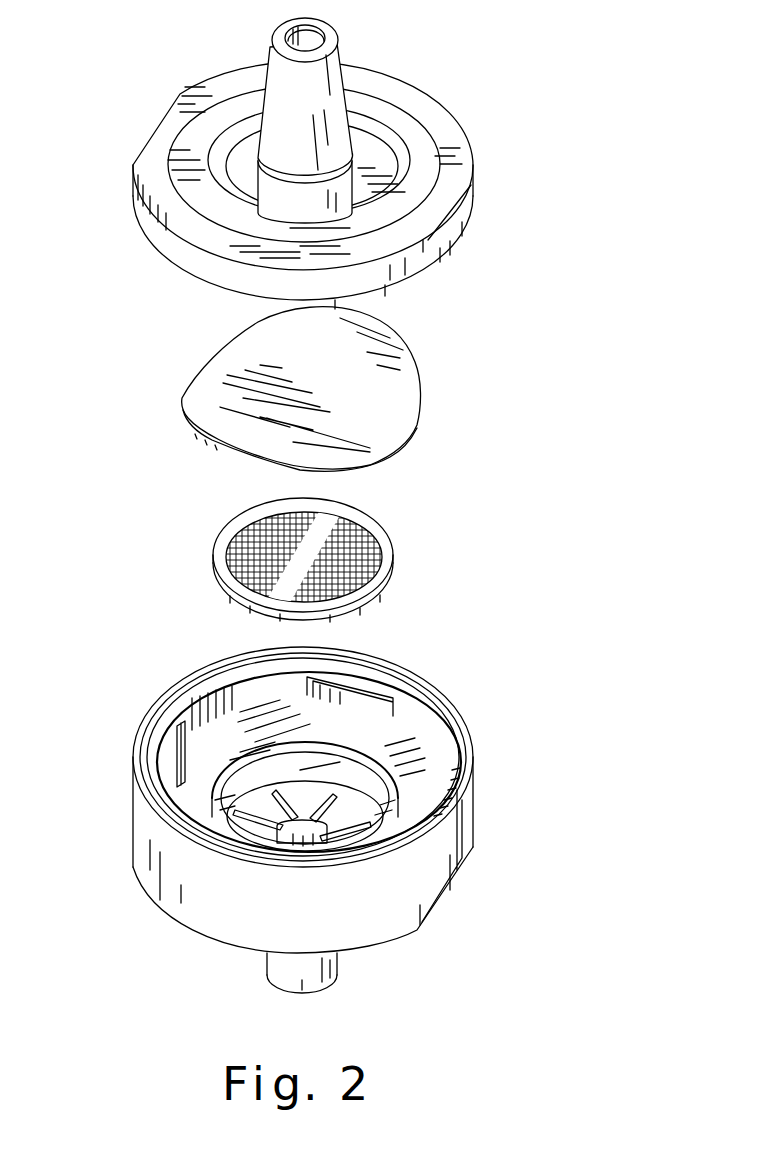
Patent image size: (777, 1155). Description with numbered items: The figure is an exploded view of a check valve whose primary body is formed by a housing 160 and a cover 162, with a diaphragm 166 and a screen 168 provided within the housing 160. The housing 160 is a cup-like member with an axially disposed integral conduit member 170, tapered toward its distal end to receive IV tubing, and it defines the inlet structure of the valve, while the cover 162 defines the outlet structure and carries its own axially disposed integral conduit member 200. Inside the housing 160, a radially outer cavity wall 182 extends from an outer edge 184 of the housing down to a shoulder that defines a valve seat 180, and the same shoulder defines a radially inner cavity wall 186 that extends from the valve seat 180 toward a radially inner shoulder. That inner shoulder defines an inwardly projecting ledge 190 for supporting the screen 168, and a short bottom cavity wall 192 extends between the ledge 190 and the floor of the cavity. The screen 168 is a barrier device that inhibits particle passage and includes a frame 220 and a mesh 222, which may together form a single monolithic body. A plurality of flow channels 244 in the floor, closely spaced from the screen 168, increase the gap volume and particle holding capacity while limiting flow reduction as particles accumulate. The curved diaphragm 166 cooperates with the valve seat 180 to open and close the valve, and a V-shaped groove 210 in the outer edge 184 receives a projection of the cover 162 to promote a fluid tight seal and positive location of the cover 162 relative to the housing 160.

The housing 160 is at (305, 787).
The cover 162 is at (455, 152).
The diaphragm 166 is at (403, 393).
The screen 168 is at (320, 551).
The integral conduit member 170 is at (320, 972).
The valve seat 180 is at (393, 747).
The radially outer cavity wall 182 is at (232, 703).
The outer edge 184 is at (465, 741).
The radially inner cavity wall 186 is at (345, 762).
The inwardly projecting ledge 190 is at (240, 770).
The short bottom cavity wall 192 is at (198, 770).
The integral conduit member 200 is at (338, 62).
The V-shaped groove 210 is at (473, 767).
The frame 220 is at (240, 518).
The mesh 222 is at (233, 547).
The flow channels 244 is at (250, 825).